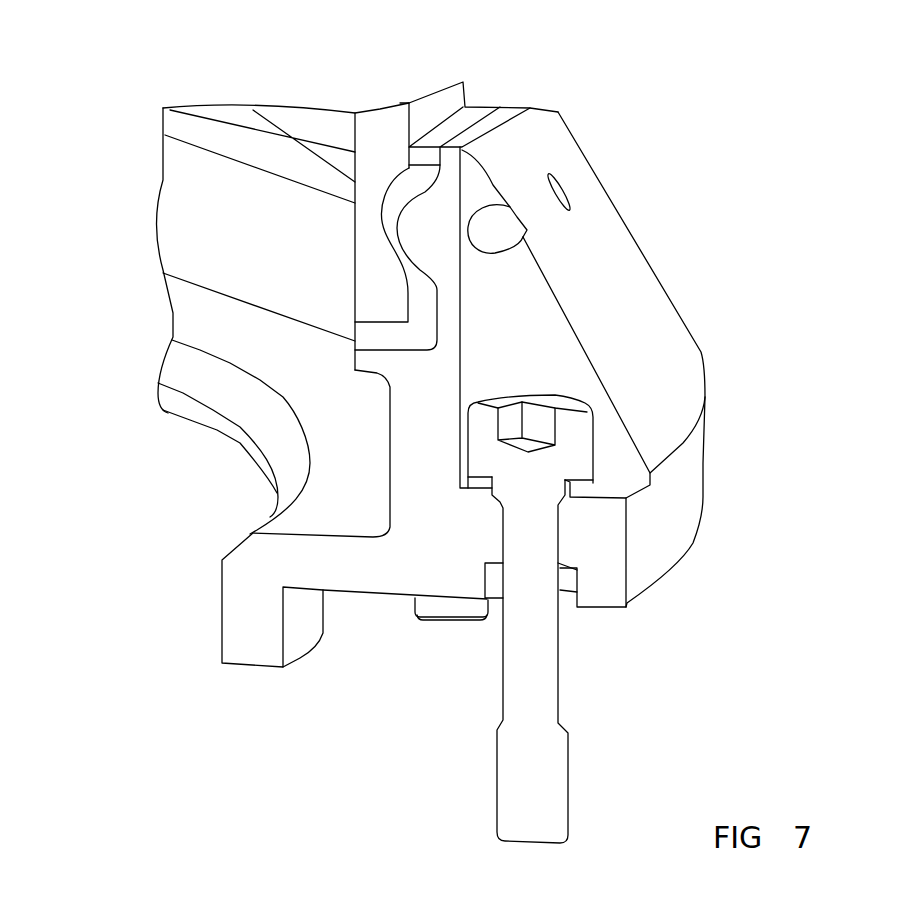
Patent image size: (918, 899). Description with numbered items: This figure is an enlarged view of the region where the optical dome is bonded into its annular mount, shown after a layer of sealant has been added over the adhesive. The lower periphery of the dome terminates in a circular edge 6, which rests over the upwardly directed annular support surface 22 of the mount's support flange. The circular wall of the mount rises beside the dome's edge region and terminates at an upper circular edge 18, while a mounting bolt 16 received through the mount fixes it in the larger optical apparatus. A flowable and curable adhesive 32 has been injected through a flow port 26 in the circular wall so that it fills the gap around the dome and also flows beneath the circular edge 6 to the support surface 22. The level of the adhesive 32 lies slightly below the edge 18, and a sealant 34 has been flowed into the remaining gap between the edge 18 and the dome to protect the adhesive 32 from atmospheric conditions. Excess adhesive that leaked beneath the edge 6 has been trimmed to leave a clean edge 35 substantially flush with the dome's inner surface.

The circular edge 6 is at (368, 322).
The mounting bolt 16 is at (533, 645).
The circular edge 18 is at (495, 120).
The support surface 22 is at (383, 350).
The flow port 26 is at (510, 228).
The adhesive 32 is at (420, 182).
The sealant 34 is at (477, 107).
The clean edge 35 is at (355, 328).